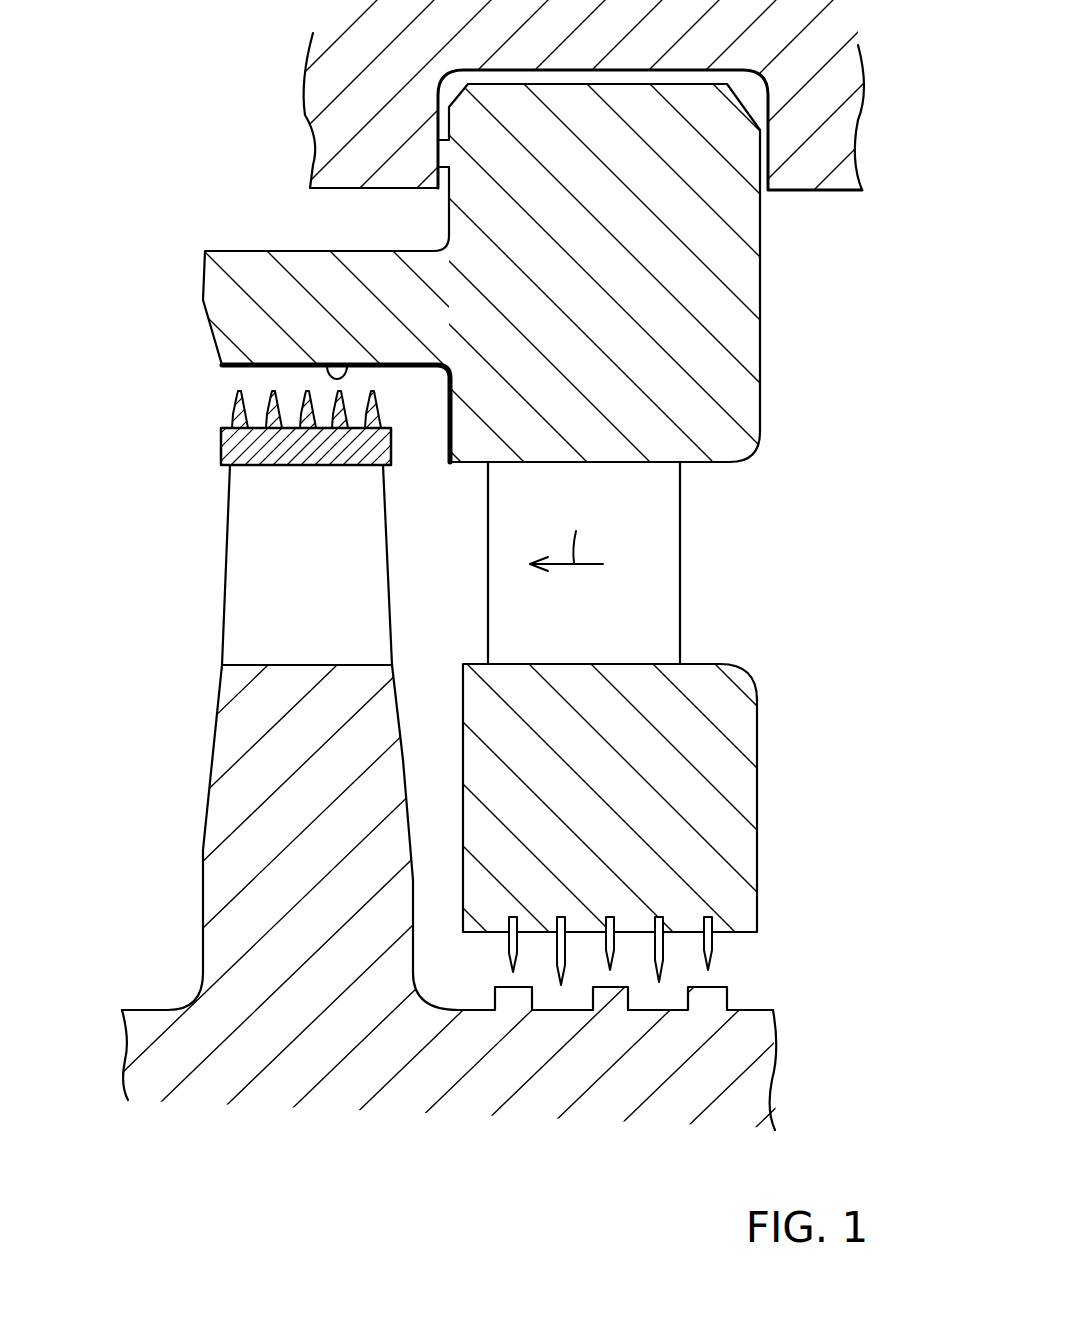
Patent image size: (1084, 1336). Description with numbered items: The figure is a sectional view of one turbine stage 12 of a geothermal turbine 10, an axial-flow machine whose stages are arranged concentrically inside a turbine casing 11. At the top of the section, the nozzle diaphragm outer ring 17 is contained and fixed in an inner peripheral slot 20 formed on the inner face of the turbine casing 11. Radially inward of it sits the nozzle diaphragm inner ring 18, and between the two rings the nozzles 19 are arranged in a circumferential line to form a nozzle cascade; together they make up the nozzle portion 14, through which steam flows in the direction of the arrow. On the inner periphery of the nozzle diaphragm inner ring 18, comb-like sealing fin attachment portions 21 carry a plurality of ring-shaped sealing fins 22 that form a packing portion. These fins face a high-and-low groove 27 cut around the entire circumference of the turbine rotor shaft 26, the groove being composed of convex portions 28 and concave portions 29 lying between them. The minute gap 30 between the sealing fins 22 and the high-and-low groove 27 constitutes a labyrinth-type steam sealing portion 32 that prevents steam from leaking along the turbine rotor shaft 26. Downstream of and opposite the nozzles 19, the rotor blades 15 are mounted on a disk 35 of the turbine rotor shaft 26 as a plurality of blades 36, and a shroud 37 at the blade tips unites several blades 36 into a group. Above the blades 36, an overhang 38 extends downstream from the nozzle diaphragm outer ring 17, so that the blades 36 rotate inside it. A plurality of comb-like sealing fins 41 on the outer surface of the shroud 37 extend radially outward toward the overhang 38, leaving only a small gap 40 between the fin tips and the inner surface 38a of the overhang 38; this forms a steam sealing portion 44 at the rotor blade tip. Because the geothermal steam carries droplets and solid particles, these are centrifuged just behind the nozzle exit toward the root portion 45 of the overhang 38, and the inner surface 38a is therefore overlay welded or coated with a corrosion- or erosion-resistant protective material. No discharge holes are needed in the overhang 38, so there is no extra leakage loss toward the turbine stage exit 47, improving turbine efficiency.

The geothermal turbine 10 is at (180, 128).
The turbine casing 11 is at (830, 87).
The turbine stage 12 is at (542, 797).
The nozzle portion 14 is at (583, 534).
The rotor blades 15 is at (542, 877).
The nozzle diaphragm outer ring 17 is at (583, 308).
The nozzle diaphragm inner ring 18 is at (745, 677).
The nozzles 19 is at (667, 603).
The inner peripheral slot 20 is at (625, 84).
The sealing fin attachment portions 21 is at (703, 921).
The sealing fins 22 is at (712, 953).
The turbine rotor shaft 26 is at (488, 1123).
The high-and-low groove 27 is at (571, 1129).
The convex portions 28 is at (613, 987).
The concave portions 29 is at (560, 1010).
The minute gap 30 is at (707, 977).
The steam sealing portion 32 is at (763, 948).
The disk 35 is at (243, 705).
The blades 36 is at (240, 633).
The shroud 37 is at (265, 447).
The overhang 38 is at (245, 251).
The inner surface 38a is at (333, 366).
The gap 40 is at (258, 392).
The sealing fins 41 is at (234, 409).
The steam sealing portion 44 is at (226, 427).
The root portion 45 is at (424, 389).
The turbine stage exit 47 is at (159, 311).